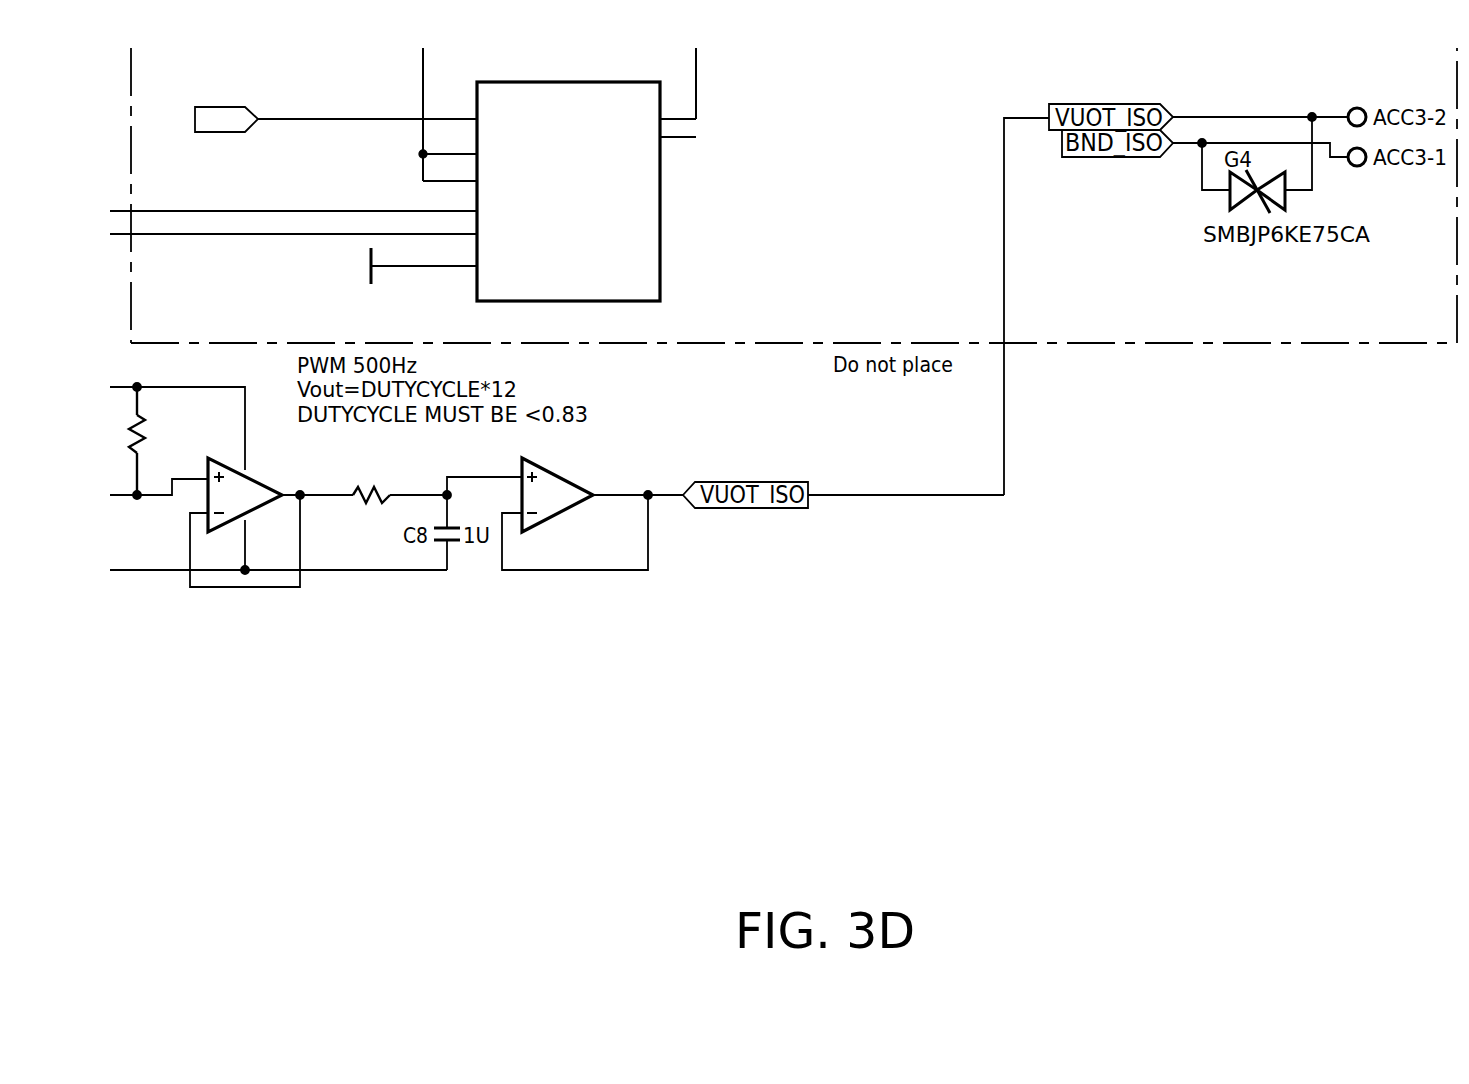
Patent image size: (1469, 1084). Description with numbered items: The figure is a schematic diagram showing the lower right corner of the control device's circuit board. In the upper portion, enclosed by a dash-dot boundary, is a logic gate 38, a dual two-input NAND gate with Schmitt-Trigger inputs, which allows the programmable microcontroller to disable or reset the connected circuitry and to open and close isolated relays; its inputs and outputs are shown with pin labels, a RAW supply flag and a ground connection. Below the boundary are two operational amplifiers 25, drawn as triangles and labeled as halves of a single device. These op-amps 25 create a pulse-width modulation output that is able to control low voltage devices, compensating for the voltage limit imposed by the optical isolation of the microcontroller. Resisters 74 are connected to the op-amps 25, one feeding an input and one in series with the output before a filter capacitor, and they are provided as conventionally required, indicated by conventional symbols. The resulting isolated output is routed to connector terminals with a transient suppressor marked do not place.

The logic gate 38 is at (633, 219).
The resister 74 is at (131, 414).
The operational amplifier 25 is at (222, 540).